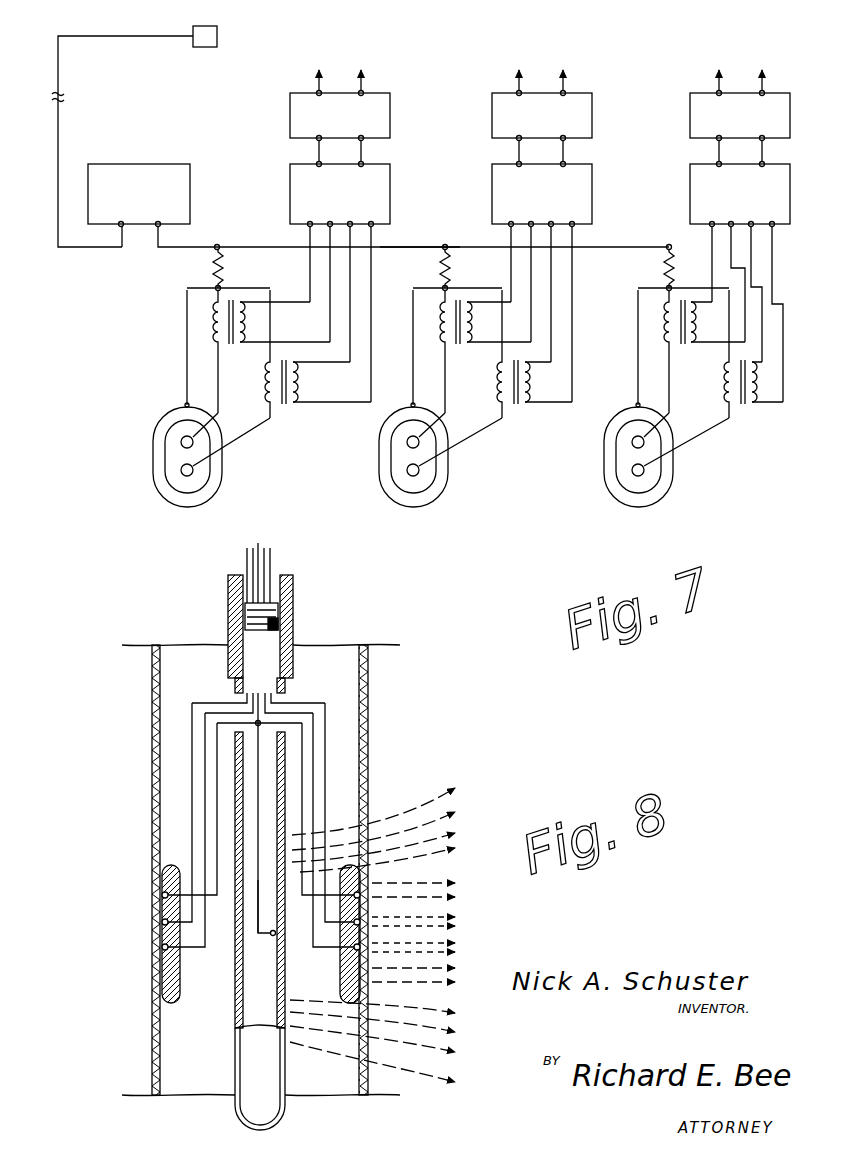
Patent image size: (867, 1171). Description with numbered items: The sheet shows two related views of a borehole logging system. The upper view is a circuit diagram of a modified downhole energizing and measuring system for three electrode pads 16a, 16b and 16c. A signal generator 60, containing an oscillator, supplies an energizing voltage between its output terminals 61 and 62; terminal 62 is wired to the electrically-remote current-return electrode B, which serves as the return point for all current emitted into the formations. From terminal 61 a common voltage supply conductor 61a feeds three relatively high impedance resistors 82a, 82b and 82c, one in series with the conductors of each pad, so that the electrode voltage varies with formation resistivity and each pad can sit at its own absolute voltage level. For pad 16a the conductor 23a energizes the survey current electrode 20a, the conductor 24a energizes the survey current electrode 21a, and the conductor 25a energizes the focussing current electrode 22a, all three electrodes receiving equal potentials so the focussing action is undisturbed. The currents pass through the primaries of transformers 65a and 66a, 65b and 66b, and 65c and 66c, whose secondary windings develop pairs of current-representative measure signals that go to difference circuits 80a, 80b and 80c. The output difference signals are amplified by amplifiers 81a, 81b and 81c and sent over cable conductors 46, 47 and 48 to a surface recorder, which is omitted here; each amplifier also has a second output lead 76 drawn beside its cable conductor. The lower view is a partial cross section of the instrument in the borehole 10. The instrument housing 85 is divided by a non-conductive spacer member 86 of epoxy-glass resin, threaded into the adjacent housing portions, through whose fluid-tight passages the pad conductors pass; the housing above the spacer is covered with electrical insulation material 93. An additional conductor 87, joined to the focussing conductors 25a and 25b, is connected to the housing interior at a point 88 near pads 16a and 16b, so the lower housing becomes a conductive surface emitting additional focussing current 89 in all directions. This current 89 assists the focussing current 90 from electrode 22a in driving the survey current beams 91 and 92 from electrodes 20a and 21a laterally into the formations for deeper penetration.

In FIG. 7, the current-return electrode B is at (208, 26).
In FIG. 7, the signal generator 60 is at (134, 164).
In FIG. 7, the output terminal 61 is at (165, 226).
In FIG. 7, the output terminal 62 is at (116, 228).
In FIG. 7, the amplifier output terminal 76 is at (316, 84).
In FIG. 7, the cable conductor 46 is at (364, 86).
In FIG. 7, the cable conductor 47 is at (566, 86).
In FIG. 7, the cable conductor 48 is at (766, 86).
In FIG. 7, the amplifier 81a is at (390, 99).
In FIG. 7, the amplifier 81b is at (592, 99).
In FIG. 7, the amplifier 81c is at (690, 126).
In FIG. 7, the difference circuit 80a is at (290, 188).
In FIG. 7, the difference circuit 80b is at (492, 188).
In FIG. 7, the difference circuit 80c is at (690, 188).
In FIG. 7, the common voltage supply conductor 61a is at (418, 246).
In FIG. 7, the resistor 82a is at (210, 268).
In FIG. 7, the resistor 82b is at (440, 268).
In FIG. 7, the resistor 82c is at (659, 268).
In FIG. 7, the transformer 65a is at (212, 322).
In FIG. 7, the transformer 65b is at (440, 325).
In FIG. 7, the transformer 65c is at (664, 320).
In FIG. 7, the transformer 66a is at (300, 384).
In FIG. 7, the transformer 66b is at (498, 385).
In FIG. 7, the transformer 66c is at (724, 383).
In FIG. 7, the conductor 25a is at (187, 350).
In FIG. 8, the conductor 25a is at (302, 748).
In FIG. 8, the conductor 25b is at (218, 752).
In FIG. 7, the conductor 23a is at (217, 380).
In FIG. 7, the conductor 24a is at (252, 432).
In FIG. 7, the focussing current electrode 22a is at (152, 446).
In FIG. 8, the focussing current electrode 22a is at (372, 893).
In FIG. 7, the survey current electrode 20a is at (181, 442).
In FIG. 8, the survey current electrode 20a is at (370, 922).
In FIG. 7, the survey current electrode 21a is at (181, 470).
In FIG. 8, the survey current electrode 21a is at (370, 948).
In FIG. 7, the electrode pad 16a is at (158, 453).
In FIG. 8, the electrode pad 16a is at (362, 934).
In FIG. 7, the electrode pad 16b is at (379, 490).
In FIG. 8, the electrode pad 16b is at (180, 995).
In FIG. 7, the electrode pad 16c is at (604, 490).
In FIG. 8, the electrical insulation material 93 is at (228, 595).
In FIG. 8, the non-conductive spacer member 86 is at (243, 622).
In FIG. 8, the additional focussing current 89 is at (410, 812).
In FIG. 8, the focussing current 90 is at (436, 932).
In FIG. 8, the survey current beam 91 is at (436, 921).
In FIG. 8, the survey current beam 92 is at (436, 947).
In FIG. 8, the conductor 87 is at (235, 935).
In FIG. 8, the connection point 88 is at (275, 936).
In FIG. 8, the instrument housing 85 is at (236, 1051).
In FIG. 8, the borehole 10 is at (160, 1075).